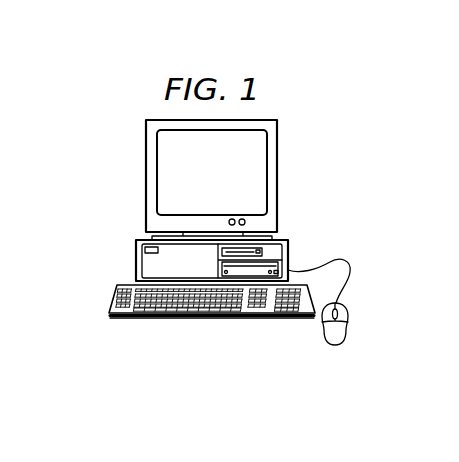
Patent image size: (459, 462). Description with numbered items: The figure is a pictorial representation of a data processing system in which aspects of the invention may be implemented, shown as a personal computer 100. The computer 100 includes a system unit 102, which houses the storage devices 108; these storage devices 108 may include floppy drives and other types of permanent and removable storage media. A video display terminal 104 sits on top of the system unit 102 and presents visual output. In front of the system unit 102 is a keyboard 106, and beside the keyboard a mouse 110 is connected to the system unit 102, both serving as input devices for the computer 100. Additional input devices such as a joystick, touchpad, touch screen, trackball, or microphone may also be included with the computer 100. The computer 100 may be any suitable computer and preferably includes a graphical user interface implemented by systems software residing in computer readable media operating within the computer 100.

The computer 100 is at (90, 164).
The system unit 102 is at (136, 257).
The video display terminal 104 is at (277, 173).
The keyboard 106 is at (127, 318).
The storage devices 108 is at (263, 249).
The mouse 110 is at (335, 345).